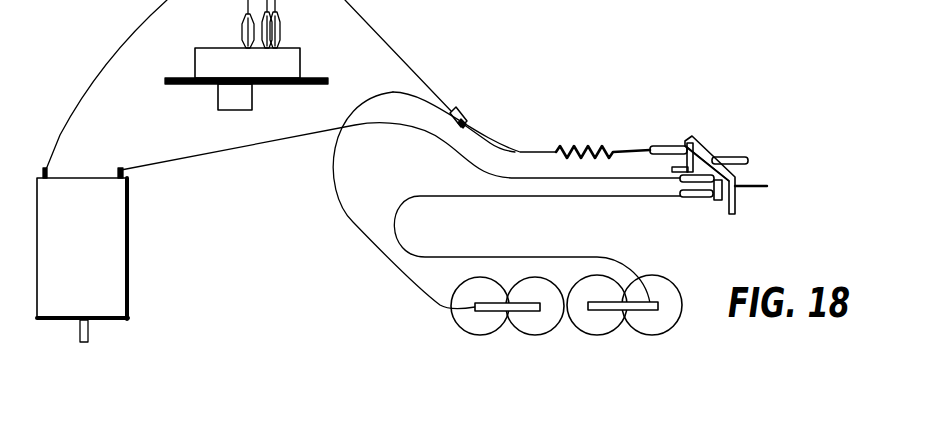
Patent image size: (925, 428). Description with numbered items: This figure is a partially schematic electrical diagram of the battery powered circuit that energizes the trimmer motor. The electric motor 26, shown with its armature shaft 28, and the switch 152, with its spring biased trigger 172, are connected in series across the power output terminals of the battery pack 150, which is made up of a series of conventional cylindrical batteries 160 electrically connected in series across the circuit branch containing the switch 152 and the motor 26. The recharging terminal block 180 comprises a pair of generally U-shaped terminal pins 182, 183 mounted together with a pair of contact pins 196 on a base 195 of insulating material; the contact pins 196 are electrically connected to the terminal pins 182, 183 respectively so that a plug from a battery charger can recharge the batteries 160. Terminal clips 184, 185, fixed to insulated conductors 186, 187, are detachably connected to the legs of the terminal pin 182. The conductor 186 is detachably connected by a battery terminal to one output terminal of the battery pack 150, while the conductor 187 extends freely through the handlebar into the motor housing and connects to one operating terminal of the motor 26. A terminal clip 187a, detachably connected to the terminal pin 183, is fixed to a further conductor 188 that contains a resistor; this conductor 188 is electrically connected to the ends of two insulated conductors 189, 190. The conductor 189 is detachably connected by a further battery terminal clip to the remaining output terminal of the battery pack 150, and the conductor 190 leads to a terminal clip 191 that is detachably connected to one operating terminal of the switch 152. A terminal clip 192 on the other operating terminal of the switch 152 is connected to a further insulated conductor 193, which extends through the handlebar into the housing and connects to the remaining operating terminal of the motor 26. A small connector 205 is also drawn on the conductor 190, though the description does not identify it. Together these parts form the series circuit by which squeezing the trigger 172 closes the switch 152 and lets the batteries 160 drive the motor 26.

The electric motor 26 is at (128, 223).
The armature shaft 28 is at (88, 337).
The battery pack 150 is at (534, 321).
The switch 152 is at (300, 60).
The batteries 160 is at (537, 325).
The trigger 172 is at (253, 105).
The terminal block 180 is at (699, 133).
The terminal pin 182 is at (720, 200).
The terminal pin 183 is at (691, 146).
The terminal clip 184 is at (690, 198).
The terminal clip 185 is at (682, 178).
The conductor 186 is at (590, 196).
The conductor 187 is at (498, 177).
The terminal clip 187a is at (666, 146).
The conductor 188 is at (538, 152).
The conductor 189 is at (367, 232).
The conductor 190 is at (387, 32).
The terminal clip 191 is at (276, 16).
The terminal clip 192 is at (243, 25).
The conductor 193 is at (145, 20).
The base 195 is at (737, 208).
The contact pins 196 is at (765, 186).
The connector sleeve 205 is at (462, 116).